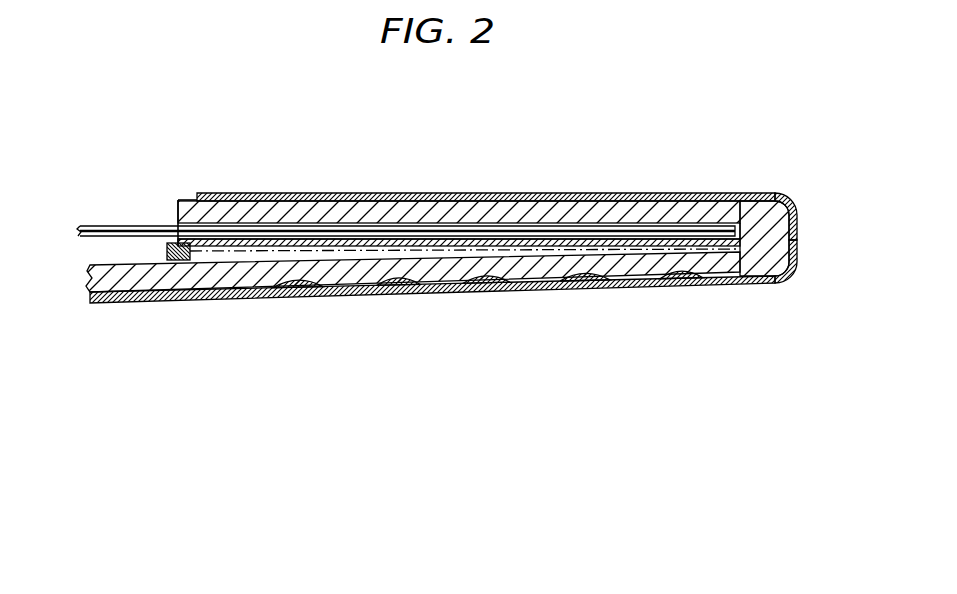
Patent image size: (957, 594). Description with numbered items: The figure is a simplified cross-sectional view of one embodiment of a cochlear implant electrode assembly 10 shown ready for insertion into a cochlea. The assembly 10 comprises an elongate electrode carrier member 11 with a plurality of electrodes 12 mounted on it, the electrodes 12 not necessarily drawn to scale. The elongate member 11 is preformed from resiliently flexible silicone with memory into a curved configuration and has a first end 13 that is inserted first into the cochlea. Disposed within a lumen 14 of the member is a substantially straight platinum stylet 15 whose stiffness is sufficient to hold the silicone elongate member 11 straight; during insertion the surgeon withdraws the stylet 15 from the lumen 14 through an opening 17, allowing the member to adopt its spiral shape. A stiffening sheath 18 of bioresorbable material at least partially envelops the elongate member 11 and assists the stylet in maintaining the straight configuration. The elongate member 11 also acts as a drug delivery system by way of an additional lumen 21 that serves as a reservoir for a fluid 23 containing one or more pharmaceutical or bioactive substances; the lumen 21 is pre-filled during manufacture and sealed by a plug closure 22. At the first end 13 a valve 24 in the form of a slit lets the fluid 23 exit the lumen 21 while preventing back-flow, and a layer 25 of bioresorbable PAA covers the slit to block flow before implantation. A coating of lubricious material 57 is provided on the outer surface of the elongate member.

The cochlear implant electrode assembly 10 is at (644, 114).
The elongate electrode carrier member 11 is at (202, 303).
The electrodes 12 is at (392, 298).
The first end 13 is at (788, 198).
The lumen 14 is at (302, 225).
The stylet 15 is at (113, 226).
The opening 17 is at (178, 222).
The stiffening sheath 18 is at (186, 200).
The additional lumen 21 is at (543, 258).
The plug closure 22 is at (167, 250).
The fluid 23 is at (447, 255).
The valve 24 is at (762, 205).
The layer of bioresorbable PAA 25 is at (789, 276).
The coating of lubricious material 57 is at (352, 195).